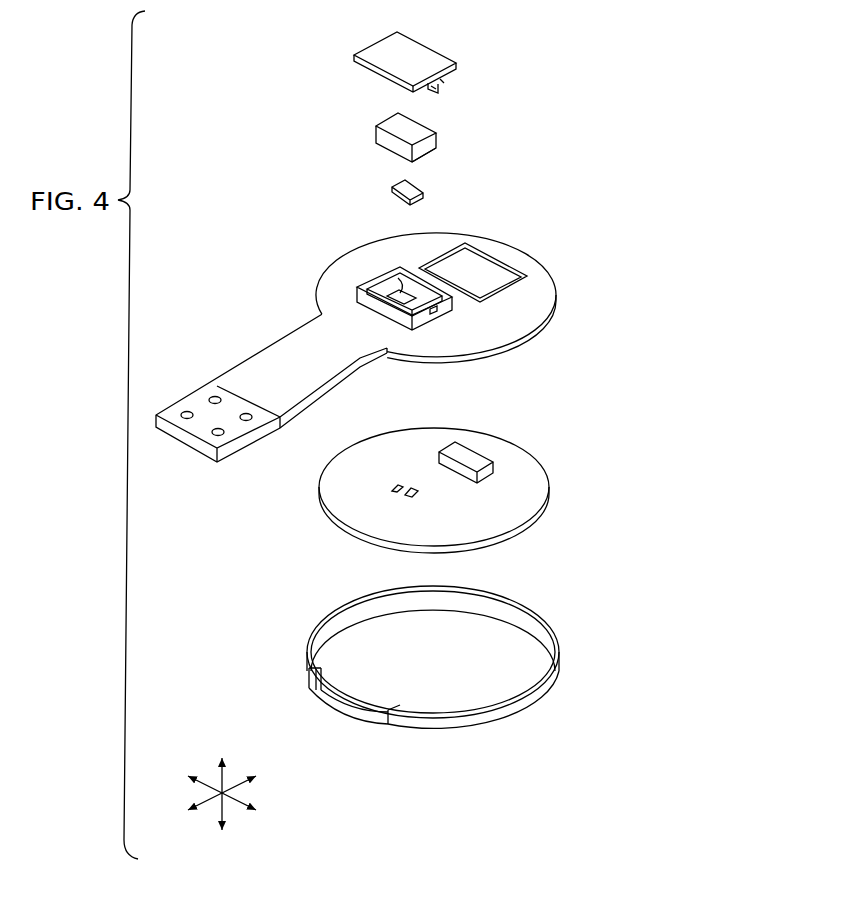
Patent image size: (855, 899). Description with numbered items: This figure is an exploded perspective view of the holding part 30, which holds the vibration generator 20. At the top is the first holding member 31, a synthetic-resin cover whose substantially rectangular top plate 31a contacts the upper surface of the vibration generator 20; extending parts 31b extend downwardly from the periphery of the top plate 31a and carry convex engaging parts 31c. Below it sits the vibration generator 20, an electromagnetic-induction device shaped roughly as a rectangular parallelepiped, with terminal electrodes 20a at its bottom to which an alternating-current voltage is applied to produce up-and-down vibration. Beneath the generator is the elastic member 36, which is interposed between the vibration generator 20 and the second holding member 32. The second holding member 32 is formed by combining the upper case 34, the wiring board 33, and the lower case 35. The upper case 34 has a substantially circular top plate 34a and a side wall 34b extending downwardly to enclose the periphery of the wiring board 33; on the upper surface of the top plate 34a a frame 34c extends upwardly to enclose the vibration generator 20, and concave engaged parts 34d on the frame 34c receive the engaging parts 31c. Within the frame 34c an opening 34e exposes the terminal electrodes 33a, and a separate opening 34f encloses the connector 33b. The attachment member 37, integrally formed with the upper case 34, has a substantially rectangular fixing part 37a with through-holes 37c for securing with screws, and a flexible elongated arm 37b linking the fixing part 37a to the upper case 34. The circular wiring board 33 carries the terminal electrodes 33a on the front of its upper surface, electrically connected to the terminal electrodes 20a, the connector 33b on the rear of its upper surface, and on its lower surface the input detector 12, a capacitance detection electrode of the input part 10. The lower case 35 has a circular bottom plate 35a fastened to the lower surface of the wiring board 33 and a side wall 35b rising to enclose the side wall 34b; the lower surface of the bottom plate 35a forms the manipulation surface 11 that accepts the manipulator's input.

The holding part 30 is at (233, 147).
The first holding member 31 is at (358, 54).
The top plate 31a is at (413, 57).
The extending parts 31b is at (443, 82).
The engaging parts 31c is at (440, 89).
The vibration generator 20 is at (380, 127).
The terminal electrodes 20a is at (423, 163).
The elastic member 36 is at (421, 190).
The second holding member 32 is at (405, 486).
The upper case 34 is at (557, 298).
The top plate 34a is at (397, 253).
The side wall 34b is at (531, 333).
The frame 34c is at (363, 296).
The engaged parts 34d is at (438, 313).
The opening 34e is at (396, 290).
The opening 34f is at (492, 268).
The attachment member 37 is at (292, 352).
The fixing part 37a is at (267, 377).
The arm 37b is at (202, 424).
The through-holes 37c is at (215, 398).
The input part 10 is at (481, 588).
The wiring board 33 is at (549, 488).
The input detector 12 is at (495, 543).
The terminal electrodes 33a is at (399, 482).
The connector 33b is at (466, 455).
The lower case 35 is at (559, 667).
The manipulation surface 11 is at (483, 733).
The bottom plate 35a is at (368, 655).
The side wall 35b is at (531, 700).